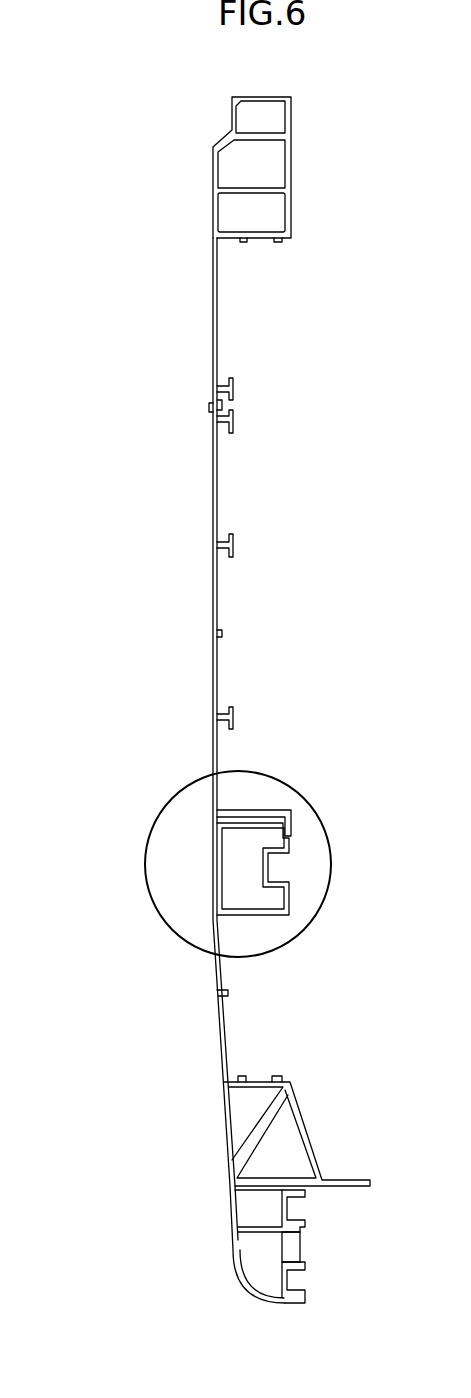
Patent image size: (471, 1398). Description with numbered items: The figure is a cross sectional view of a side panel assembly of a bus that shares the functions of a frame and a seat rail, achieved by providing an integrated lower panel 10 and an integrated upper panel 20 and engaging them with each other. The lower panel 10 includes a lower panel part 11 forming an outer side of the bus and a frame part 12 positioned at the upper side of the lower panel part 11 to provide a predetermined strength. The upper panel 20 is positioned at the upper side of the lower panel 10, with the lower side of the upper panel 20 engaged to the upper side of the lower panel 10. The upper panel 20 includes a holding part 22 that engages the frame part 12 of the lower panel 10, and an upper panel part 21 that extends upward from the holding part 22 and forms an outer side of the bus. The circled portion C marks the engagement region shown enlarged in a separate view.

The lower panel 10 is at (232, 978).
The lower panel part 11 is at (250, 912).
The frame part 12 is at (219, 1047).
The upper panel 20 is at (250, 672).
The upper panel part 21 is at (213, 680).
The holding part 22 is at (215, 820).
The portion C is at (148, 838).